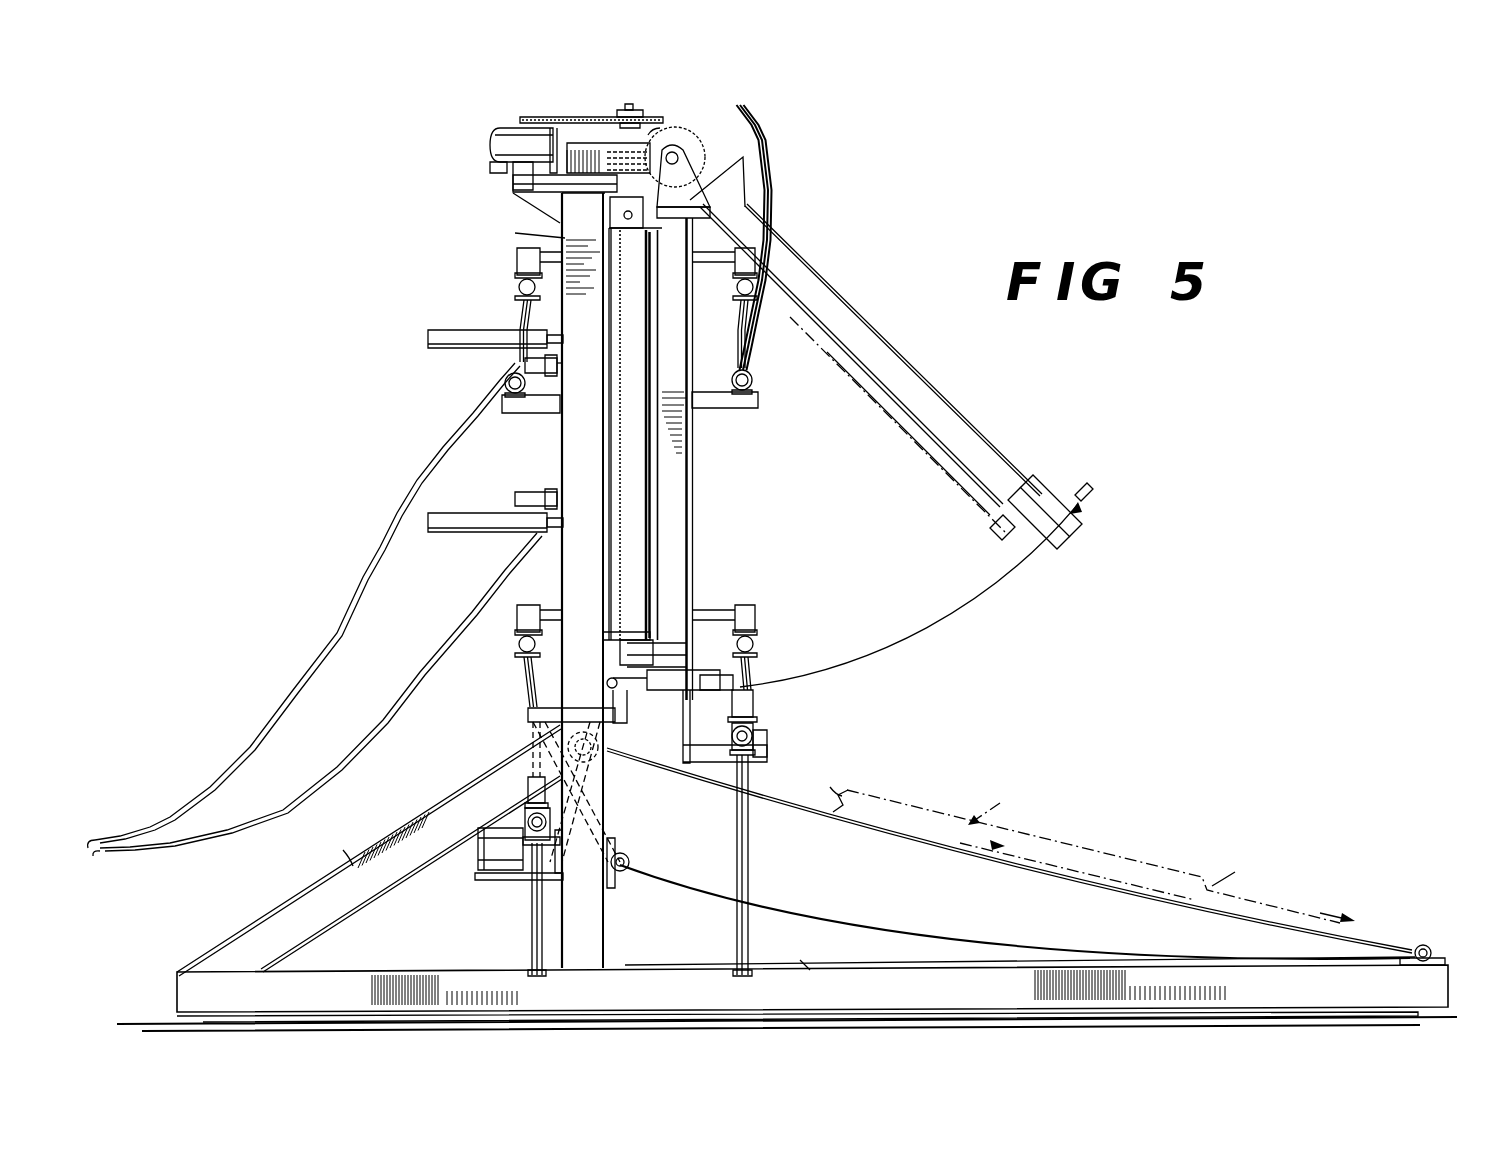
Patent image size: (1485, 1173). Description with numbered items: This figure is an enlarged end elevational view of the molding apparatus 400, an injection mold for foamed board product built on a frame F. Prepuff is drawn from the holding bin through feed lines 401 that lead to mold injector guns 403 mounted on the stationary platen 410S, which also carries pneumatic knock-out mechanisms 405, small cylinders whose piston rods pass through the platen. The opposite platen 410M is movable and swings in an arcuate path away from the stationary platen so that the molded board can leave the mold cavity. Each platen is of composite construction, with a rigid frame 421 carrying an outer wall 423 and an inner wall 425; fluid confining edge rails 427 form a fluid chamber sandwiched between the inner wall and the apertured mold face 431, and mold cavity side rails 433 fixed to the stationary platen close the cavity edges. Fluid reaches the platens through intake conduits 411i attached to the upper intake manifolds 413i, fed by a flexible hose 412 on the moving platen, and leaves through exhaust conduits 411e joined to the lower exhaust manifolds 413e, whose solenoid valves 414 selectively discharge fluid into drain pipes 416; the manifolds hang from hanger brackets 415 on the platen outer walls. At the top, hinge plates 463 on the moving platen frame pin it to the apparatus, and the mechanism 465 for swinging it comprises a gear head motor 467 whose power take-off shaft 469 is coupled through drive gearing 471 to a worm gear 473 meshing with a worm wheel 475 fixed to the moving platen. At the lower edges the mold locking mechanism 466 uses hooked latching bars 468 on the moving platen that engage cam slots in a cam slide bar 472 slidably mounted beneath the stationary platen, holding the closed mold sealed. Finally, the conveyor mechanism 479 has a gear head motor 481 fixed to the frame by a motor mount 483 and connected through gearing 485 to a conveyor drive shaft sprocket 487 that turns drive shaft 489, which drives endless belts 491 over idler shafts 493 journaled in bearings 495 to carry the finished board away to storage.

The molding apparatus 400 is at (848, 169).
The feed lines 401 is at (236, 782).
The mold injector guns 403 is at (482, 338).
The pneumatic knock-out mechanisms 405 is at (540, 376).
The stationary platen 410S is at (606, 459).
The movable platen 410M is at (688, 507).
The intake conduits 411i is at (518, 302).
The exhaust conduits 411e is at (525, 667).
The flexible hose 412 is at (772, 203).
The intake manifolds 413i is at (505, 385).
The exhaust manifolds 413e is at (522, 826).
The solenoid valves 414 is at (530, 790).
The hanger brackets 415 is at (520, 410).
The drain pipes 416 is at (532, 940).
The frame 421 is at (688, 468).
The outer wall 423 is at (616, 562).
The inner wall 425 is at (658, 527).
The fluid confining edge rails 427 is at (618, 604).
The apertured mold face 431 is at (652, 614).
The mold cavity side rails 433 is at (628, 538).
The hinge plates 463 is at (690, 186).
The mechanism for moving the platen 465 is at (646, 114).
The mold locking mechanism 466 is at (618, 705).
The gear head motor 467 is at (505, 160).
The latching bars 468 is at (630, 692).
The power take-off shaft 469 is at (500, 129).
The drive gearing 471 is at (548, 118).
The cam slide bar 472 is at (610, 692).
The worm gear 473 is at (655, 148).
The worm wheel 475 is at (705, 152).
The conveyor mechanism 479 is at (1278, 910).
The gear head motor 481 is at (478, 858).
The motor mount 483 is at (478, 886).
The gearing 485 is at (600, 800).
The conveyor drive shaft sprocket 487 is at (598, 772).
The drive shaft 489 is at (608, 686).
The endless belts 491 is at (850, 924).
The idler shafts 493 is at (632, 866).
The bearings 495 is at (627, 860).